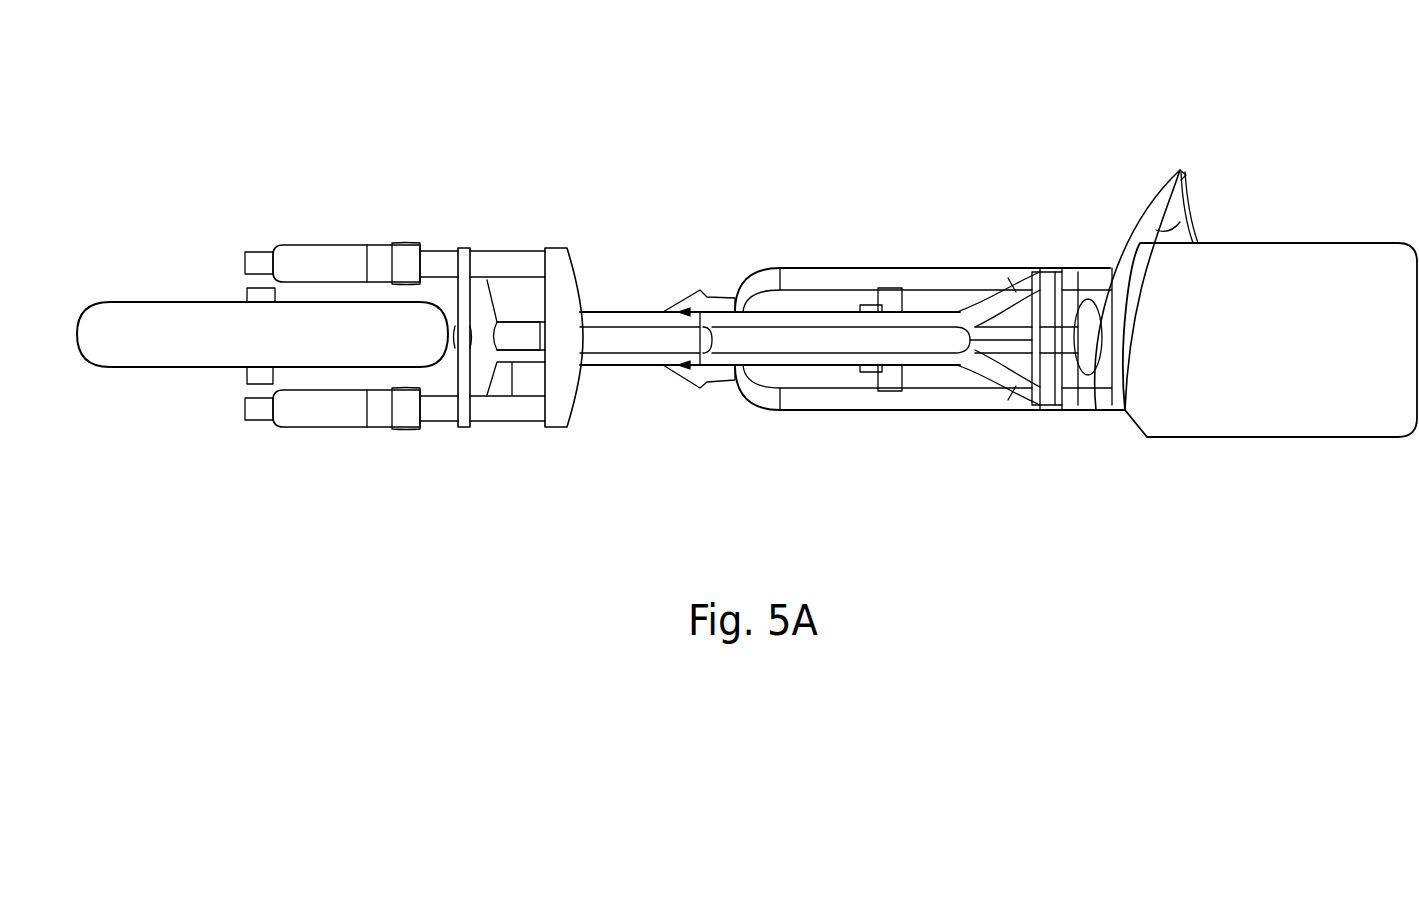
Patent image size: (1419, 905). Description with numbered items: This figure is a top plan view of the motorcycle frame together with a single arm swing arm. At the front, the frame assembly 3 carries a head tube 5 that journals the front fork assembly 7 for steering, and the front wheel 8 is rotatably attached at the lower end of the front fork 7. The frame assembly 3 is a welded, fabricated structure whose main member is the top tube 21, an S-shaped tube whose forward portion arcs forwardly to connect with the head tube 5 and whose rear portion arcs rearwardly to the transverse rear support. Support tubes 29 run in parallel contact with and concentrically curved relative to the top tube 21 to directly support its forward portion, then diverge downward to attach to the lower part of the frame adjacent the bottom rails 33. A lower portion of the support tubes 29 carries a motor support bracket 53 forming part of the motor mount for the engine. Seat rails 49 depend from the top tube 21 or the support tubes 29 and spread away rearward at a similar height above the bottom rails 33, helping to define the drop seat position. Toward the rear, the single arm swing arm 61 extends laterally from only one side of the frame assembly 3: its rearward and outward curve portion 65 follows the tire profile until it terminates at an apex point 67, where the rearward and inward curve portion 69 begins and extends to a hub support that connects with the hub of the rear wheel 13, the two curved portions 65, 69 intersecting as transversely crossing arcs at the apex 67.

The frame assembly 3 is at (672, 433).
The head tube 5 is at (520, 342).
The front fork assembly 7 is at (497, 412).
The front wheel 8 is at (158, 347).
The rear wheel 13 is at (1297, 405).
The top tube 21 is at (612, 340).
The support tubes 29 is at (658, 310).
The bottom rails 33 is at (843, 397).
The seat rails 49 is at (997, 375).
The motor support bracket 53 is at (866, 380).
The single arm swing arm 61 is at (1222, 78).
The rearward and outward curve portion 65 is at (1118, 222).
The apex point 67 is at (1185, 170).
The rearward and inward curve portion 69 is at (1178, 222).